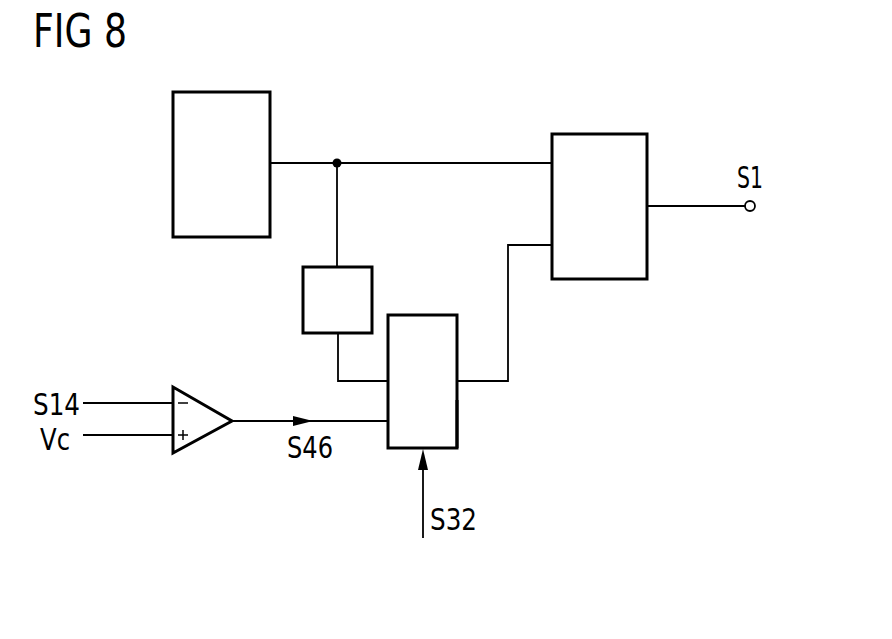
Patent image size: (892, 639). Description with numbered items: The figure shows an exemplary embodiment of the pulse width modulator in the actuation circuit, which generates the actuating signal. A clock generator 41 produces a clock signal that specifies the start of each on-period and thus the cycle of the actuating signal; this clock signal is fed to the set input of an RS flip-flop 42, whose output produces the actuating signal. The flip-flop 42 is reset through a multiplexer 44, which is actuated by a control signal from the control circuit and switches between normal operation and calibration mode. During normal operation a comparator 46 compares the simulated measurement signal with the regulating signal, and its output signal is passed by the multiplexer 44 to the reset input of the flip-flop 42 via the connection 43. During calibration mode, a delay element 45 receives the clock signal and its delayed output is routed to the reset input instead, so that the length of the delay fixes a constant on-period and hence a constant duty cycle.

The clock generator 41 is at (220, 92).
The RS flip-flop 42 is at (598, 134).
The input terminal of block 44 43 is at (457, 413).
The multiplexer 44 is at (409, 315).
The delay element 45 is at (352, 267).
The comparator 46 is at (202, 437).